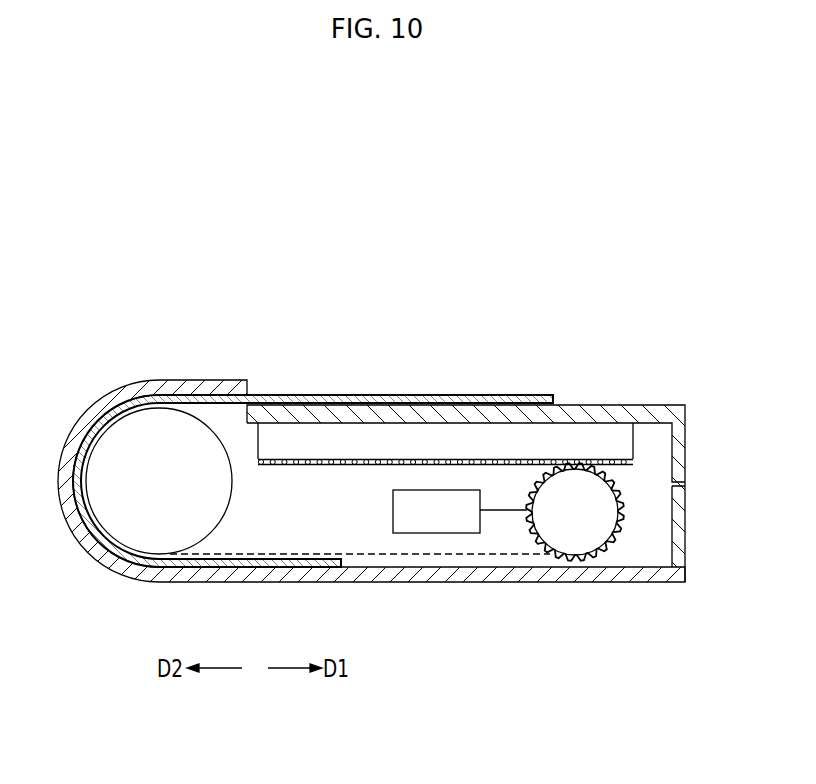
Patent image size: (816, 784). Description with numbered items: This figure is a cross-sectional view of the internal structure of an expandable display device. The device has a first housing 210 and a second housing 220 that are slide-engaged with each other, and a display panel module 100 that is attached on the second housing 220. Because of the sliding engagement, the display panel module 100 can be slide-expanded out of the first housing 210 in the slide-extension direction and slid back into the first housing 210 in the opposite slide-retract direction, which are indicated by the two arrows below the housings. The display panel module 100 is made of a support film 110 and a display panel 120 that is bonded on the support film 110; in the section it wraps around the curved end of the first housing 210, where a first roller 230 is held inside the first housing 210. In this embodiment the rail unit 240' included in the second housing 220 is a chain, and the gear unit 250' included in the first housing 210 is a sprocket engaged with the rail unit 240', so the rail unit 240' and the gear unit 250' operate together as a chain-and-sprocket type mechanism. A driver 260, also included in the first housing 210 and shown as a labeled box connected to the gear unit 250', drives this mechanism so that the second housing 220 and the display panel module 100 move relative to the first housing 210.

The display panel module 100 is at (437, 390).
The support film 110 is at (368, 556).
The display panel 120 is at (297, 566).
The first housing 210 is at (186, 380).
The second housing 220 is at (636, 403).
The first roller 230 is at (151, 540).
The rail unit 240' is at (499, 444).
The gear unit 250' is at (575, 548).
The driver 260 is at (437, 534).